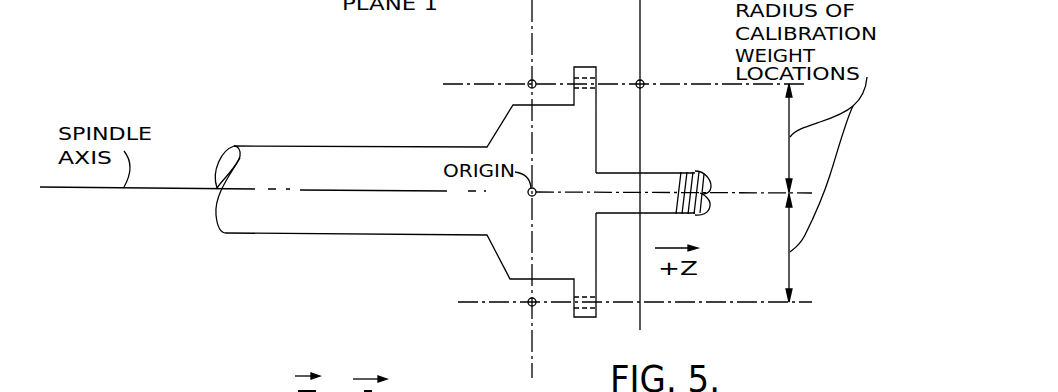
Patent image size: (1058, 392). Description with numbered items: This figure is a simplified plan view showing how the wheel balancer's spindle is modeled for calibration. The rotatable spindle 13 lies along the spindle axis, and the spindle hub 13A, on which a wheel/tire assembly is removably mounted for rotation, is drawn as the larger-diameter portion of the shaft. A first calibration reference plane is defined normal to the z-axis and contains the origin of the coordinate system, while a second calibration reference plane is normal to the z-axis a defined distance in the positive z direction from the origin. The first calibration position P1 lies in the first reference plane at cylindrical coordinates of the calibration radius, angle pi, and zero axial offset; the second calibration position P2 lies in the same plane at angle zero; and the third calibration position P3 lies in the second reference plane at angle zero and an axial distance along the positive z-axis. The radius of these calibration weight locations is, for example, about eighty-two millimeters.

The spindle 13 is at (672, 172).
The spindle hub 13A is at (372, 146).
The calibration position 1 P1 is at (528, 306).
The calibration position 2 P2 is at (531, 80).
The calibration position 3 P3 is at (640, 80).